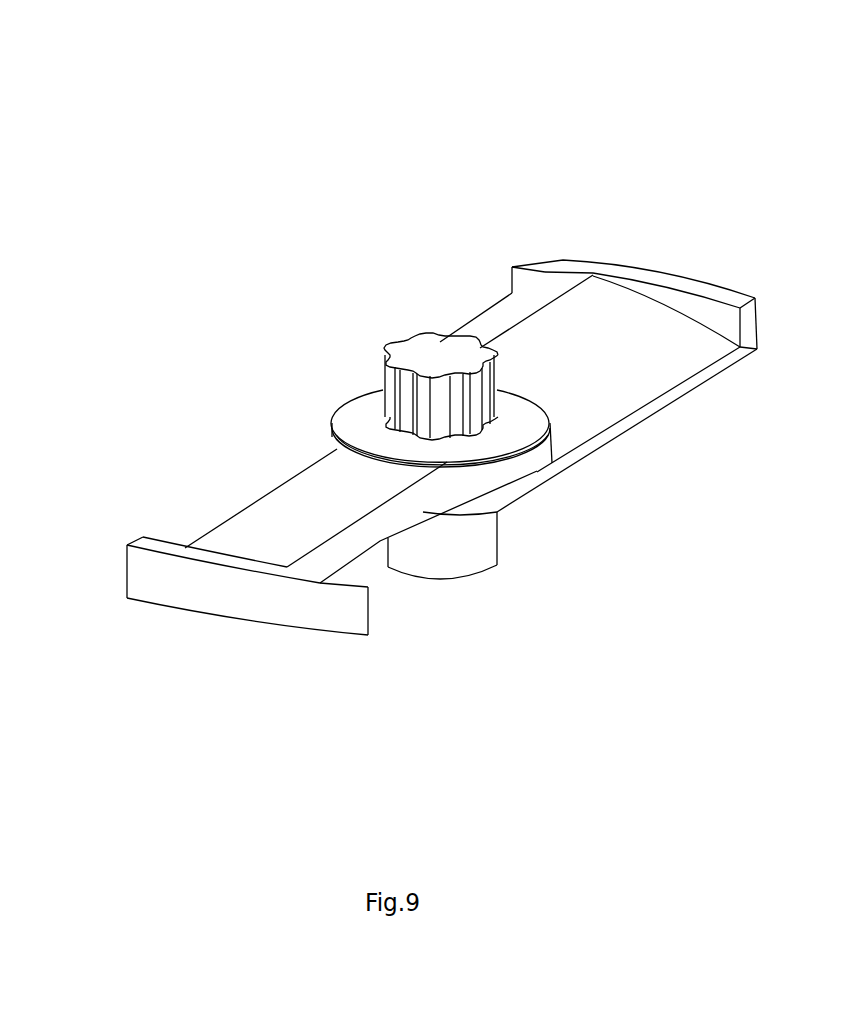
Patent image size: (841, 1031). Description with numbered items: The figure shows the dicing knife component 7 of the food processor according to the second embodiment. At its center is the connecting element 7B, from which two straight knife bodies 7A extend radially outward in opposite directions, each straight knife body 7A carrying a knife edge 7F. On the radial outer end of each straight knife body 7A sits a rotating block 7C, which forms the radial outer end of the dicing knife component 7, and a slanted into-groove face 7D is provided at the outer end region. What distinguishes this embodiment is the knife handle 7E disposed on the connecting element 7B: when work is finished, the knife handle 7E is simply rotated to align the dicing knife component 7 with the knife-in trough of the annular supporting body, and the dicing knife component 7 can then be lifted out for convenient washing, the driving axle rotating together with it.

The dicing knife component 7 is at (345, 258).
The straight knife body 7A is at (593, 345).
The connecting element 7B is at (507, 420).
The rotating block 7C is at (693, 263).
The slanted into-groove face 7D is at (545, 272).
The knife handle 7E is at (510, 382).
The knife edge 7F is at (507, 300).